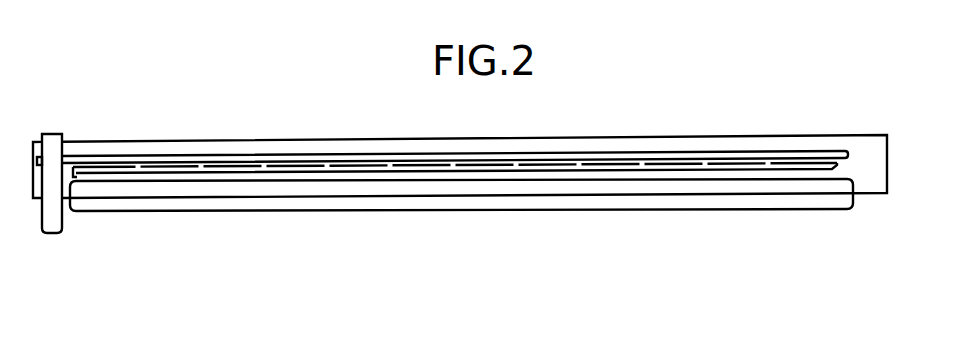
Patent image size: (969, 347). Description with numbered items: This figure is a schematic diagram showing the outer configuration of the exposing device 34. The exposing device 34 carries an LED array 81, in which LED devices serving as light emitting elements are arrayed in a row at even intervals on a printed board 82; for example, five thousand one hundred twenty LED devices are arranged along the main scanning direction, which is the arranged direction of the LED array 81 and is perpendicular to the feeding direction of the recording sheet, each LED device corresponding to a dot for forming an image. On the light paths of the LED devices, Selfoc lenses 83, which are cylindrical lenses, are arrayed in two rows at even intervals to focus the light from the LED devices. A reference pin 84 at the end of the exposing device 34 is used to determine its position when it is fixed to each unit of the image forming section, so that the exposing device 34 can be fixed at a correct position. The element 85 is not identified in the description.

The exposing device 34 is at (589, 320).
The LED array 81 is at (281, 182).
The printed board 82 is at (499, 176).
The Selfoc lenses 83 is at (618, 215).
The reference pin 84 is at (61, 236).
The connector terminal 85 is at (84, 181).